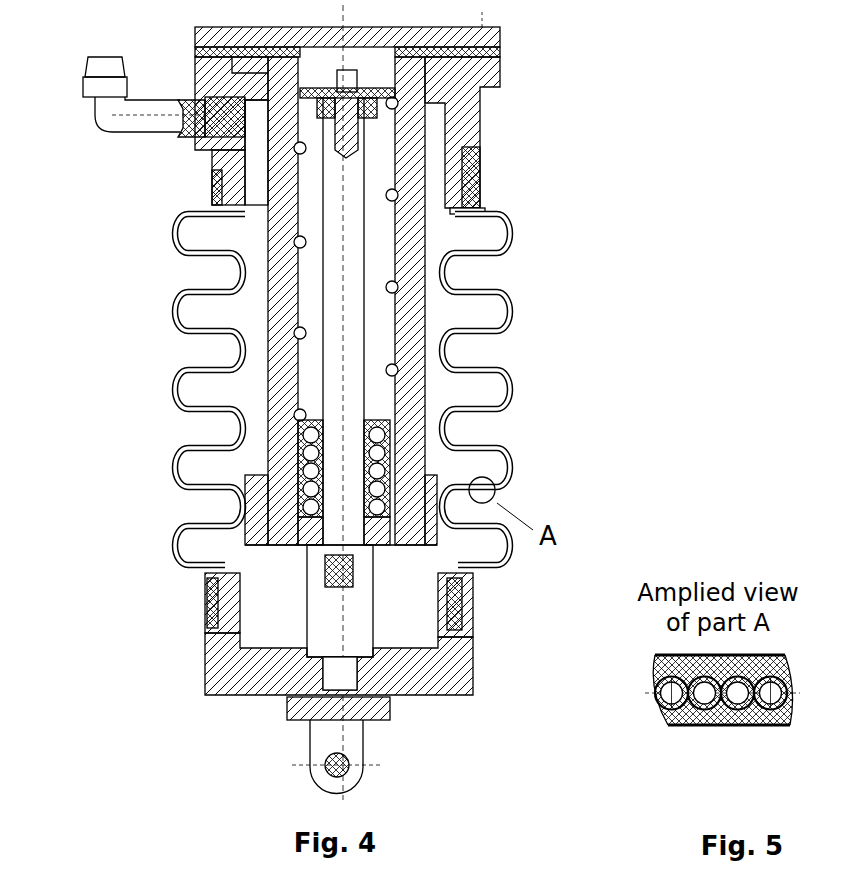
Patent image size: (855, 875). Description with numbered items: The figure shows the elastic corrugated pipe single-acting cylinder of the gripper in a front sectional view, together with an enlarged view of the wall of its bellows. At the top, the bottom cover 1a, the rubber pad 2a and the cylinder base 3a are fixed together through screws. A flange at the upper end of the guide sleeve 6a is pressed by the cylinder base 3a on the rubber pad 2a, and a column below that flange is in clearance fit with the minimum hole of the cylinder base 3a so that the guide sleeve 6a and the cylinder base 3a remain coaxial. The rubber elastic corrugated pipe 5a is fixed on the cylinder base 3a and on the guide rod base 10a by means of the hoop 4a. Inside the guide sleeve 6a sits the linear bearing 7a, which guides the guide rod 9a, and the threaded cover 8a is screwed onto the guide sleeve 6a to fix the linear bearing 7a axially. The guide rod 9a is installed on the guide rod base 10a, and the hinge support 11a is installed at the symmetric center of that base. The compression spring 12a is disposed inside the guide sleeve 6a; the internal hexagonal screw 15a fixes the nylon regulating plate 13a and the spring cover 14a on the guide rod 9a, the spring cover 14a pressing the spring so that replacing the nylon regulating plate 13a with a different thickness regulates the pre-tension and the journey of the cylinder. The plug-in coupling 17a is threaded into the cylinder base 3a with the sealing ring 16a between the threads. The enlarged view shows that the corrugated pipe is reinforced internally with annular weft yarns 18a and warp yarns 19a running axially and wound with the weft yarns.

In FIG. 4, the bottom cover 1a is at (500, 52).
In FIG. 4, the rubber pad 2a is at (502, 87).
In FIG. 4, the cylinder base 3a is at (485, 135).
In FIG. 4, the hoop 4a is at (505, 213).
In FIG. 4, the elastic corrugated pipe 5a is at (477, 258).
In FIG. 4, the guide sleeve 6a is at (415, 280).
In FIG. 4, the linear bearing 7a is at (472, 527).
In FIG. 4, the threaded cover 8a is at (377, 520).
In FIG. 4, the guide rod 9a is at (365, 580).
In FIG. 4, the guide rod base 10a is at (400, 672).
In FIG. 4, the hinge support 11a is at (310, 722).
In FIG. 4, the compression spring 12a is at (263, 352).
In FIG. 4, the nylon regulating plate 13a is at (217, 193).
In FIG. 4, the spring cover 14a is at (217, 155).
In FIG. 4, the internal hexagonal screw 15a is at (198, 143).
In FIG. 4, the sealing ring 16a is at (200, 82).
In FIG. 4, the plug-in coupling 17a is at (115, 90).
In FIG. 5, the annular weft yarns 18a is at (745, 700).
In FIG. 5, the warp yarns 19a is at (718, 690).